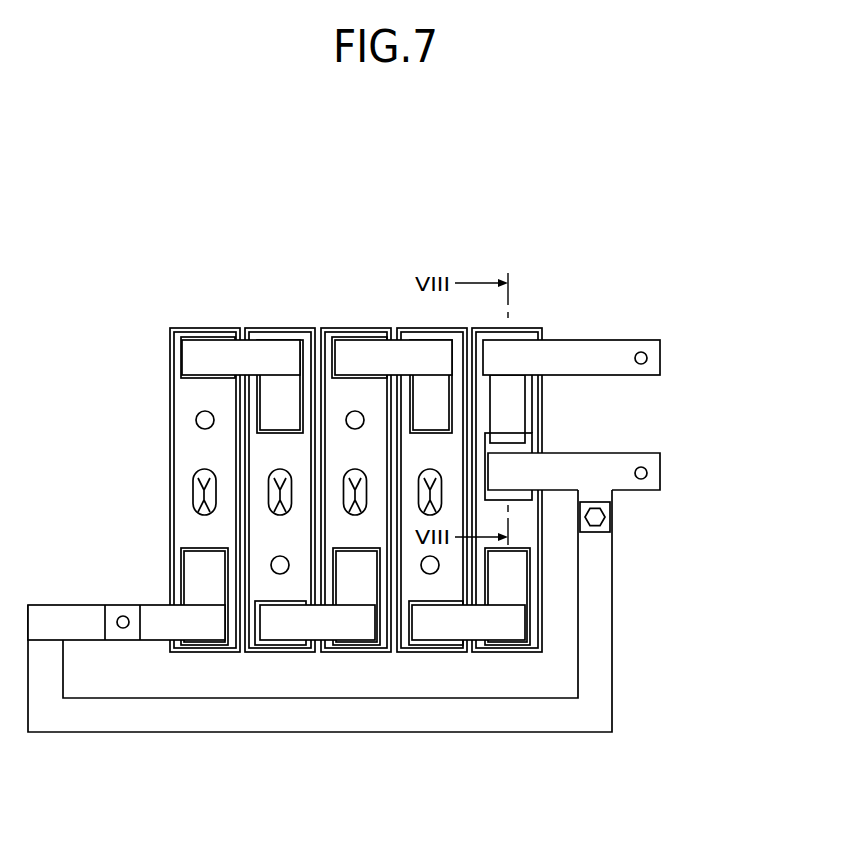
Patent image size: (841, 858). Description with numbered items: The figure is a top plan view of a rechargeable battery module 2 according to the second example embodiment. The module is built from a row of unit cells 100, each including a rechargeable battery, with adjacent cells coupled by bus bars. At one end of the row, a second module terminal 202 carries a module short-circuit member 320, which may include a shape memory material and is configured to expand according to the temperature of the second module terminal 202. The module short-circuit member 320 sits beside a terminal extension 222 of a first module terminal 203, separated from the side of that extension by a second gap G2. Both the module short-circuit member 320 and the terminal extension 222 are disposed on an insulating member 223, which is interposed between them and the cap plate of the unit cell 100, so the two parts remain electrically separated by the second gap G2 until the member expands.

The rechargeable battery module 2 is at (329, 232).
The unit cell 100 is at (208, 322).
The second module terminal 202 is at (583, 357).
The module short-circuit member 320 is at (512, 392).
The terminal extension 222 is at (647, 493).
The first module terminal 203 is at (598, 548).
The insulating member 223 is at (518, 497).
The second gap G2 is at (525, 443).